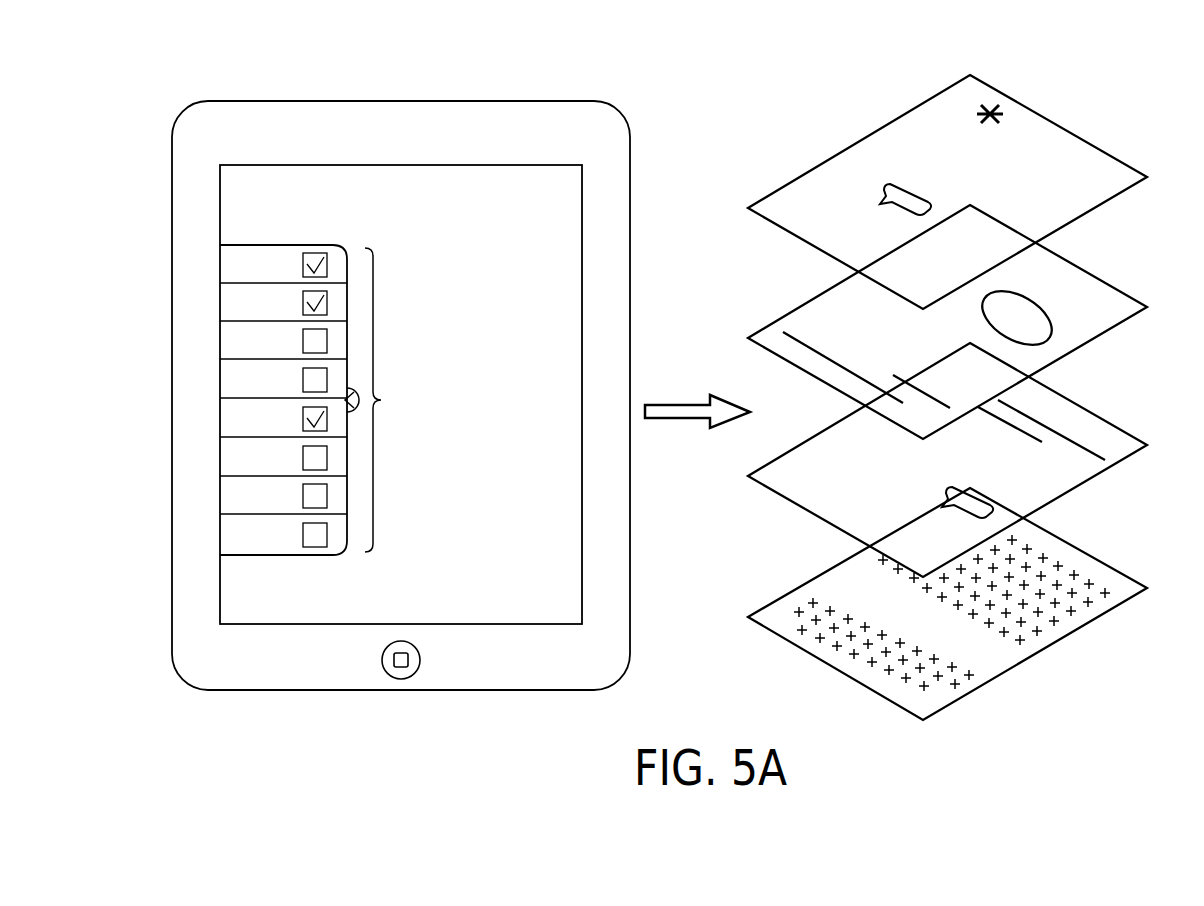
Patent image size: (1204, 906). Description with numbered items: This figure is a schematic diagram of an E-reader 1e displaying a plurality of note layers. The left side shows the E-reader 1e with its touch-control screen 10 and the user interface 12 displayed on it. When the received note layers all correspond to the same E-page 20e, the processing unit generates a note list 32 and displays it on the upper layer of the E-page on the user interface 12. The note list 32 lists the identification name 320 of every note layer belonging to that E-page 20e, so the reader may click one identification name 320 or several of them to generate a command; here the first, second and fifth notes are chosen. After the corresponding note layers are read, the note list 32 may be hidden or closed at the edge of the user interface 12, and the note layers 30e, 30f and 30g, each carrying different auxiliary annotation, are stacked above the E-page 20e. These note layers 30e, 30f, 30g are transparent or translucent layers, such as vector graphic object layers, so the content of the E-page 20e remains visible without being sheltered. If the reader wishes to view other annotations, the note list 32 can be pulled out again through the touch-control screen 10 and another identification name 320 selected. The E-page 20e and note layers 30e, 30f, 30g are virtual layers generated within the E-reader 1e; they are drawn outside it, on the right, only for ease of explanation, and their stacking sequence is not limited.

The E-reader 1e is at (431, 359).
The touch-control screen 10 is at (582, 262).
The user interface 12 is at (508, 185).
The note list 32 is at (259, 245).
The identification name 320 is at (393, 400).
The note layer 30e is at (1098, 160).
The note layer 30f is at (1098, 290).
The note layer 30g is at (1098, 428).
The E-page 20e is at (1098, 570).